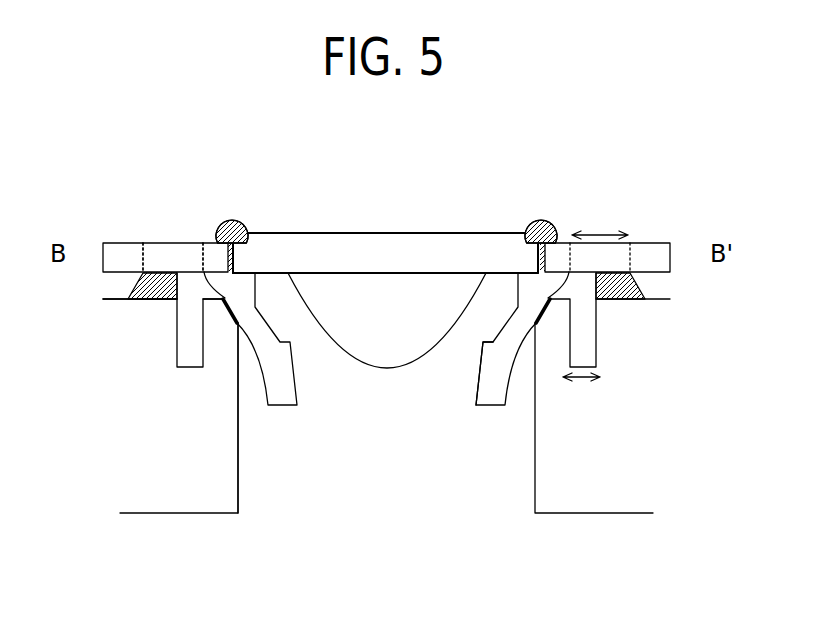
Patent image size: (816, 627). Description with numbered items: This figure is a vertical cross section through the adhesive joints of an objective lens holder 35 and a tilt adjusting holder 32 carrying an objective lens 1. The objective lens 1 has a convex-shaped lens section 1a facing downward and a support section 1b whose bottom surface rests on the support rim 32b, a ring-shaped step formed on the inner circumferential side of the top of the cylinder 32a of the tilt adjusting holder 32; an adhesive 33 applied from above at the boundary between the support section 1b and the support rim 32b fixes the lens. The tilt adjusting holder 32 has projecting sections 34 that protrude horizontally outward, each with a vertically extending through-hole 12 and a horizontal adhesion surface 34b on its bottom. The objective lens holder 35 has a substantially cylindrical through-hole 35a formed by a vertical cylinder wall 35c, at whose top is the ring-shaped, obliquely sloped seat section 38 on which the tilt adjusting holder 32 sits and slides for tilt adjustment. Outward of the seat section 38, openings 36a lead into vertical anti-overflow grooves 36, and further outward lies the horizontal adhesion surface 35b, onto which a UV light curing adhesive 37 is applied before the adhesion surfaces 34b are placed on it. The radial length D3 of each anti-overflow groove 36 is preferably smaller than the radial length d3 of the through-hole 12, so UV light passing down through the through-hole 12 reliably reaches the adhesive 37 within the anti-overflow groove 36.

The objective lens 1 is at (422, 248).
The convex-shaped lens section 1a is at (363, 335).
The support section 1b is at (245, 272).
The through-hole 12 is at (602, 262).
The tilt adjusting holder 32 is at (490, 398).
The cylinder 32a is at (485, 365).
The support rim 32b is at (243, 250).
The adhesive 33 is at (230, 222).
The projecting section 34 is at (122, 252).
The adhesion surface 34b is at (158, 266).
The objective lens holder 35 is at (386, 406).
The through-hole 35a is at (368, 490).
The adhesion surface 35b is at (147, 302).
The cylinder wall 35c is at (238, 458).
The anti-overflow groove 36 is at (190, 357).
The opening 36a is at (193, 307).
The UV light curing adhesive 37 is at (143, 290).
The seat section 38 is at (228, 312).
The distance d3 is at (600, 214).
The distance D3 is at (582, 391).